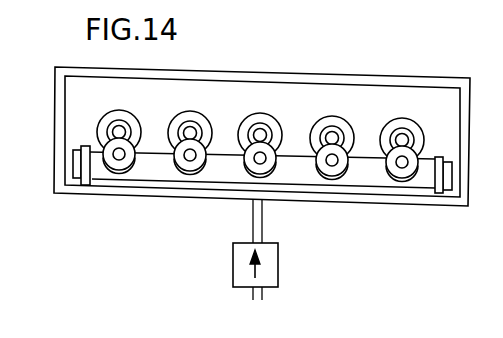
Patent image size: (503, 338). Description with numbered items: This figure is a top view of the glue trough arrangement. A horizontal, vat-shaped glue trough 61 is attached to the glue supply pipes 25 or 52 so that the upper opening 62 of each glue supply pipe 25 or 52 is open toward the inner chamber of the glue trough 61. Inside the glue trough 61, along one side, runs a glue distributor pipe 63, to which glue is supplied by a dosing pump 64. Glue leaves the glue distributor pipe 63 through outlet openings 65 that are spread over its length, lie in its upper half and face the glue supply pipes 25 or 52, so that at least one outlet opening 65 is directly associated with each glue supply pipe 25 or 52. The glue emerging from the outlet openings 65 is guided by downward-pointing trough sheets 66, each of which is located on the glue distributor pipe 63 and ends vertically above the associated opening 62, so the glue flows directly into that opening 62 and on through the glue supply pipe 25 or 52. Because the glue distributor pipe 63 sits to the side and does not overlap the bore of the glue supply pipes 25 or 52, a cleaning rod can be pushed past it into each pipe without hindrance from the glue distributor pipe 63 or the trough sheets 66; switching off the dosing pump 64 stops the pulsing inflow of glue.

The glue supply pipe 25 is at (293, 99).
The glue supply pipe 52 is at (332, 160).
The glue trough 61 is at (437, 80).
The upper opening 62 is at (398, 122).
The glue distributor pipe 63 is at (148, 168).
The dosing pump 64 is at (242, 258).
The outlet opening 65 is at (262, 158).
The trough sheet 66 is at (397, 172).